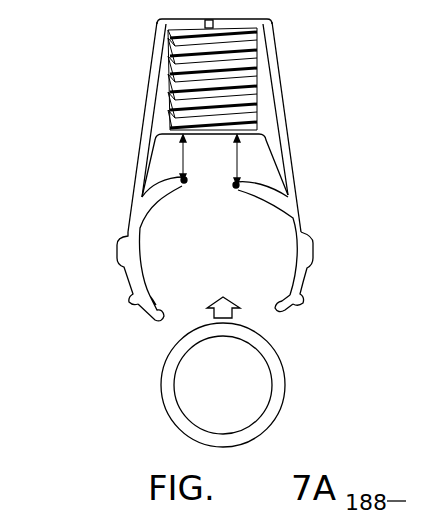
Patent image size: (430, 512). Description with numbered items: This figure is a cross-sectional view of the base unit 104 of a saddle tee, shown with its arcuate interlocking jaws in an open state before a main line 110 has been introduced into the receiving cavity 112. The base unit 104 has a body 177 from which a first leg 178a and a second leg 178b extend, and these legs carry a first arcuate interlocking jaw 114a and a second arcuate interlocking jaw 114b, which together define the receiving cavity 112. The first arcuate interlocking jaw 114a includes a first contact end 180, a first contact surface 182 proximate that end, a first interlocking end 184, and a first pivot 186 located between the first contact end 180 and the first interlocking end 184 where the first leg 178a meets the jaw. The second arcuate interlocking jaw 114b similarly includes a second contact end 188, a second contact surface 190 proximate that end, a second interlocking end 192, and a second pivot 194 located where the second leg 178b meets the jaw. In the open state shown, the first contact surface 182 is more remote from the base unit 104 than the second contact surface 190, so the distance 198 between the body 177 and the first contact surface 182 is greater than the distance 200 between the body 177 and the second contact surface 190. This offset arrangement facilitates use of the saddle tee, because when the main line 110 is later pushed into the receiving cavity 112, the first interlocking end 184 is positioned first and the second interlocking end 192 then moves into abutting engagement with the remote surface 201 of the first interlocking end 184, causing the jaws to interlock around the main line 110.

The base unit 104 is at (157, 33).
The body 177 is at (160, 100).
The second leg 178b is at (137, 155).
The first leg 178a is at (290, 168).
The receiving cavity 112 is at (230, 260).
The distance 198 is at (265, 143).
The distance 200 is at (140, 168).
The second pivot 194 is at (138, 194).
The second contact surface 190 is at (130, 222).
The second contact end 188 is at (190, 183).
The first pivot 186 is at (300, 190).
The first contact surface 182 is at (305, 210).
The first contact end 180 is at (236, 184).
The second arcuate interlocking jaw 114b is at (133, 298).
The second interlocking end 192 is at (157, 317).
The first arcuate interlocking jaw 114a is at (308, 270).
The remote surface 201 is at (292, 306).
The first interlocking end 184 is at (287, 293).
The main line 110 is at (162, 382).